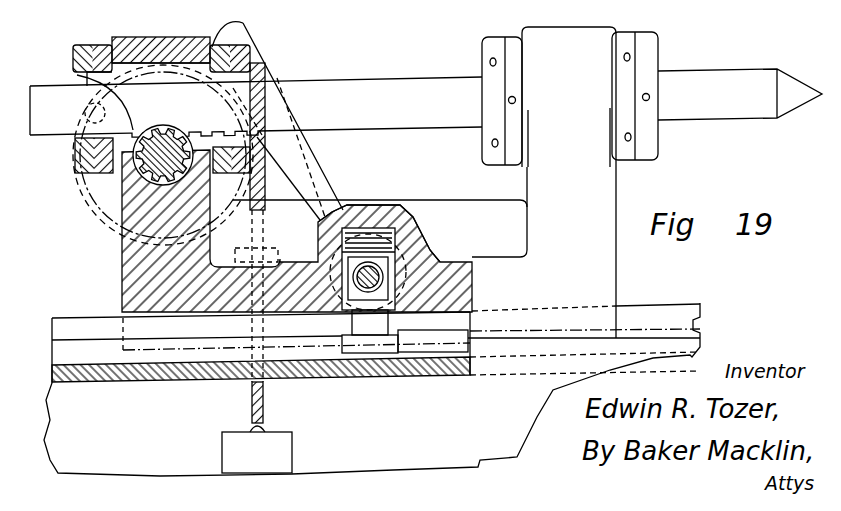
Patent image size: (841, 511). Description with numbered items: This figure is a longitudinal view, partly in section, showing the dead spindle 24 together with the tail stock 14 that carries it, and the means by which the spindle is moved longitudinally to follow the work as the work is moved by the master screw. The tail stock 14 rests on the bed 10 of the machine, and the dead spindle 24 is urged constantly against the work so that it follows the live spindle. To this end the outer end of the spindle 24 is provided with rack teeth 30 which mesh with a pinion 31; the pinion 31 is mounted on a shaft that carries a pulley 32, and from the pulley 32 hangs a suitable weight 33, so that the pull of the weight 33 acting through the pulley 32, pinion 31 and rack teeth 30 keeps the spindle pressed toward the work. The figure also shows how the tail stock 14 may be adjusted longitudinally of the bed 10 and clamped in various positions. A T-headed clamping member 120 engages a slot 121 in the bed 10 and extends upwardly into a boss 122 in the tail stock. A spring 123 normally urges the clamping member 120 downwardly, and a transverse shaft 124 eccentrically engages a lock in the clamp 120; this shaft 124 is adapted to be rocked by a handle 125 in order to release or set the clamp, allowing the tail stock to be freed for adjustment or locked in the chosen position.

The bed 10 is at (372, 389).
The tail stock 14 is at (445, 182).
The dead spindle 24 is at (800, 45).
The rack teeth 30 is at (80, 87).
The pinion 31 is at (118, 184).
The pulley 32 is at (112, 220).
The weight 33 is at (233, 452).
The T-headed clamping member 120 is at (388, 352).
The slot 121 is at (440, 325).
The boss 122 is at (417, 232).
The spring 123 is at (390, 222).
The transverse shaft 124 is at (350, 268).
The handle 125 is at (315, 163).